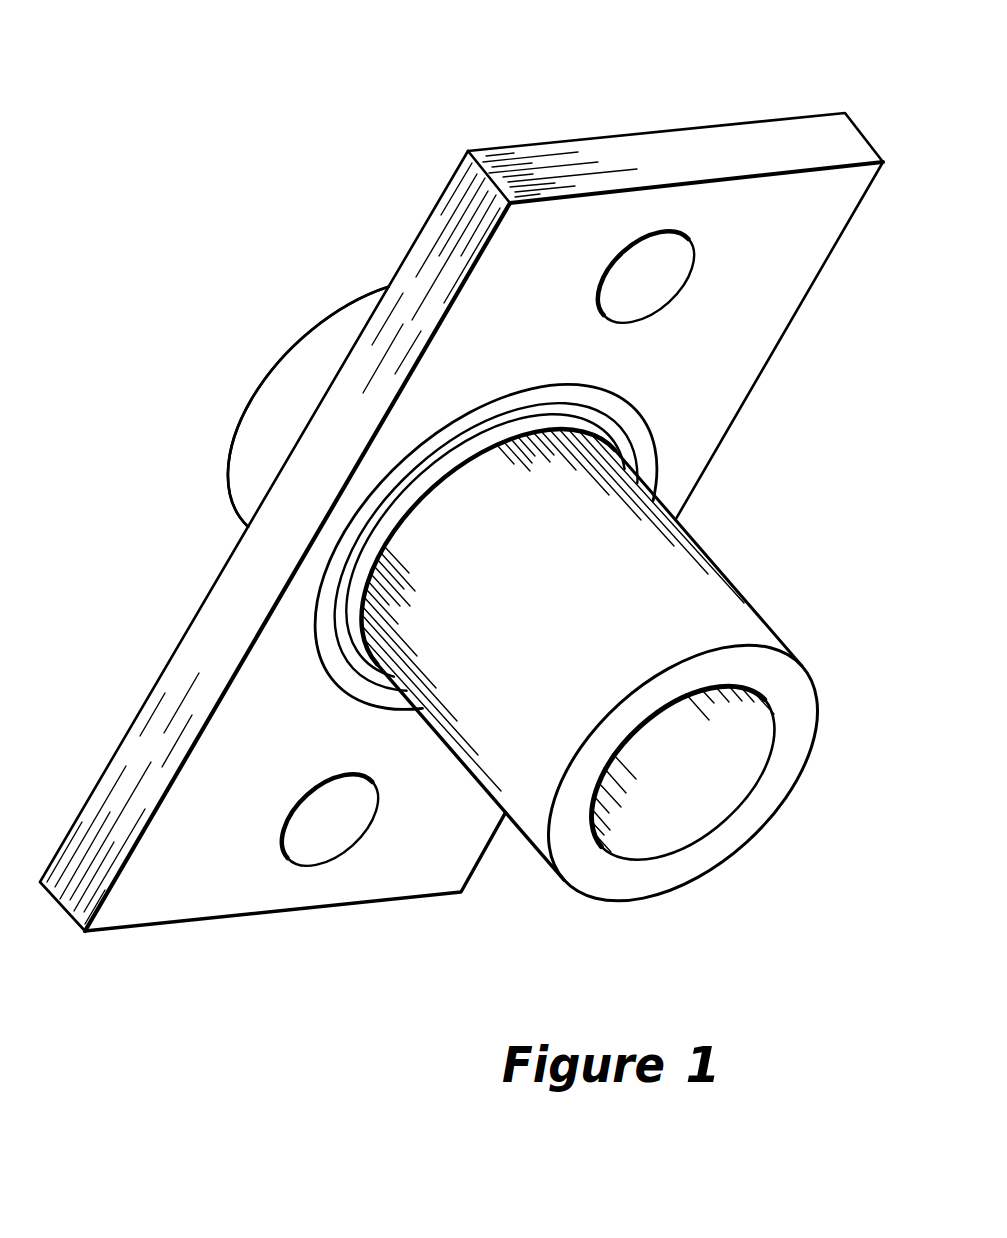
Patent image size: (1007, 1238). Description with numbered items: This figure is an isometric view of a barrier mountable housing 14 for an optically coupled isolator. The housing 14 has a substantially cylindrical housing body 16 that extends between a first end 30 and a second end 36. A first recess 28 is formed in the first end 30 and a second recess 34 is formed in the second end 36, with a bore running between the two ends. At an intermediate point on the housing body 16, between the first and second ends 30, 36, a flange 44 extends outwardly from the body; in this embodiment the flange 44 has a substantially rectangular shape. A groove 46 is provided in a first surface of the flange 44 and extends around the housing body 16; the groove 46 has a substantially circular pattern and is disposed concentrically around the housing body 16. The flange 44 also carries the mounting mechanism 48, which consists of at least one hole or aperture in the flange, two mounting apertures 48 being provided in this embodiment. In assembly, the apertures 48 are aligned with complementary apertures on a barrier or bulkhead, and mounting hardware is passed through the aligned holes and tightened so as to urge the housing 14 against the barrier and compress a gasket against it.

The housing 14 is at (461, 465).
The housing body 16 is at (720, 568).
The first recess 28 is at (296, 346).
The first end 30 is at (212, 489).
The second recess 34 is at (727, 783).
The second end 36 is at (838, 666).
The flange 44 is at (700, 128).
The groove 46 is at (608, 407).
The mounting mechanism 48 is at (668, 277).